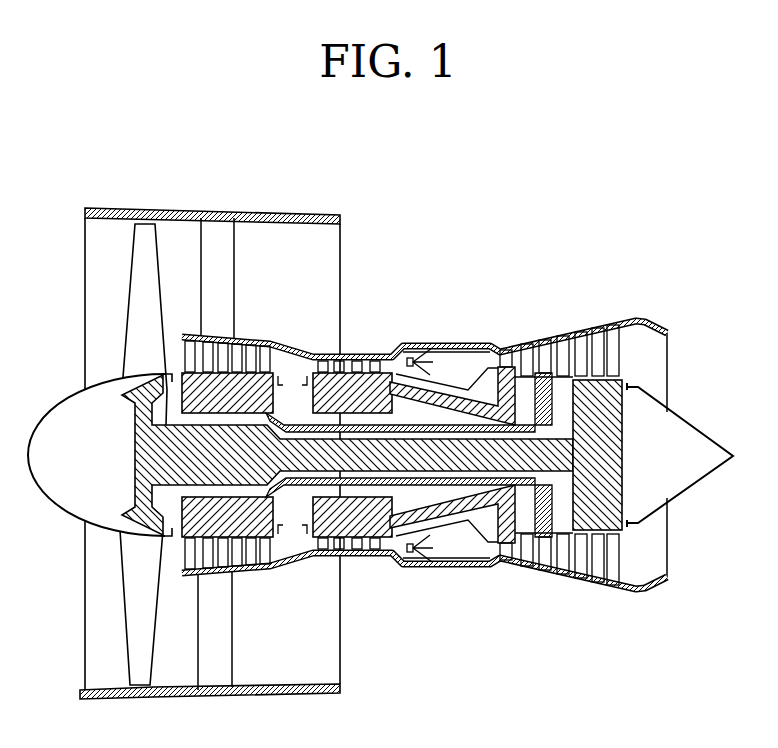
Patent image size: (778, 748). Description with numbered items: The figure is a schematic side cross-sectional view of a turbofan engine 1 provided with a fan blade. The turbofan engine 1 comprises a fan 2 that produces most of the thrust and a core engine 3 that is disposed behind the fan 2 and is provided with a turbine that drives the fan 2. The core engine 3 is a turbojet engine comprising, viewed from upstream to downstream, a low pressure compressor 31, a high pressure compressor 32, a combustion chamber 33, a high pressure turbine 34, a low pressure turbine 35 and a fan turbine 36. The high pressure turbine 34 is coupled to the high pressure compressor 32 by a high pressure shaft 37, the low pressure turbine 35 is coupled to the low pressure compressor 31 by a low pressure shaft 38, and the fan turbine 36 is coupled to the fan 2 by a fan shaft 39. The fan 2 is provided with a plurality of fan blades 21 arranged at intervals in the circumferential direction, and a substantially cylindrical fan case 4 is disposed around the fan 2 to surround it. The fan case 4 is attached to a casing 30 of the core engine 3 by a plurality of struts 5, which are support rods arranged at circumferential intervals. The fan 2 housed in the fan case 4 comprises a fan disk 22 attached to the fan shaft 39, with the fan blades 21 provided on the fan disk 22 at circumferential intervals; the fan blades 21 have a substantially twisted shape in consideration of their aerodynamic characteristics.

The turbofan engine 1 is at (474, 222).
The fan 2 is at (100, 454).
The core engine 3 is at (457, 438).
The fan case 4 is at (211, 195).
The struts 5 is at (233, 649).
The fan blades 21 is at (140, 343).
The fan disk 22 is at (140, 390).
The casing 30 is at (289, 571).
The low pressure compressor 31 is at (262, 340).
The high pressure compressor 32 is at (358, 353).
The combustion chamber 33 is at (446, 356).
The high pressure turbine 34 is at (511, 345).
The low pressure turbine 35 is at (546, 334).
The fan turbine 36 is at (617, 320).
The high pressure shaft 37 is at (462, 522).
The low pressure shaft 38 is at (522, 500).
The fan shaft 39 is at (560, 498).